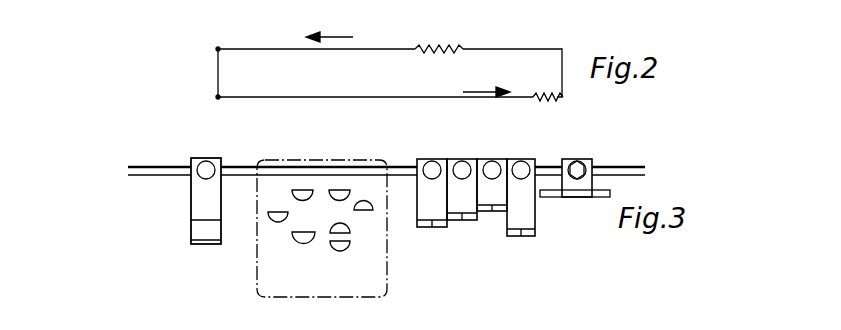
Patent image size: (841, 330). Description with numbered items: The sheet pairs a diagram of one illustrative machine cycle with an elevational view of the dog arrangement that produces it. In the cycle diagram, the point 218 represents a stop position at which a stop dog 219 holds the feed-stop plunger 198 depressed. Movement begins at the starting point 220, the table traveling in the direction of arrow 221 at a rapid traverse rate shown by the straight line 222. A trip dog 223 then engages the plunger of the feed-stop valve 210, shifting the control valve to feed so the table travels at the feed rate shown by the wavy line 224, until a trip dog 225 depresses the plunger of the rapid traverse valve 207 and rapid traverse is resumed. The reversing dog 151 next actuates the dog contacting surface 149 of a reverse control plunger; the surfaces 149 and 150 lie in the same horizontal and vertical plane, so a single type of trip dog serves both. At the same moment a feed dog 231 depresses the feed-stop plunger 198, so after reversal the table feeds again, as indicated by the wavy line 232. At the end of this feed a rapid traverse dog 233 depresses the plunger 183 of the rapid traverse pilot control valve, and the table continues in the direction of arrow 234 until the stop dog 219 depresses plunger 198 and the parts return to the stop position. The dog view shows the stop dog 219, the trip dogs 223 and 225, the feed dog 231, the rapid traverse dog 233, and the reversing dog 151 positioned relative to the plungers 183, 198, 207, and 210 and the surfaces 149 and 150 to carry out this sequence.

In FIG. 2, the stop position point 218 is at (218, 97).
In FIG. 2, the starting point 220 is at (218, 49).
In FIG. 2, the arrow 221 is at (334, 36).
In FIG. 2, the straight line 222 is at (396, 52).
In FIG. 2, the wavy line 224 is at (447, 43).
In FIG. 2, the wavy line 232 is at (537, 100).
In FIG. 2, the arrow 234 is at (480, 88).
In FIG. 3, the dog contacting surface 149 is at (339, 190).
In FIG. 3, the dog contacting surface 150 is at (300, 190).
In FIG. 3, the reversing dog 151 is at (580, 163).
In FIG. 3, the plunger 183 is at (277, 222).
In FIG. 3, the feed-stop plunger 198 is at (300, 246).
In FIG. 3, the rapid traverse valve 207 is at (369, 212).
In FIG. 3, the feed-stop valve 210 is at (346, 229).
In FIG. 3, the stop dog 219 is at (198, 206).
In FIG. 3, the trip dog 223 is at (440, 228).
In FIG. 3, the trip dog 225 is at (498, 212).
In FIG. 3, the feed dog 231 is at (524, 237).
In FIG. 3, the rapid traverse dog 233 is at (468, 221).